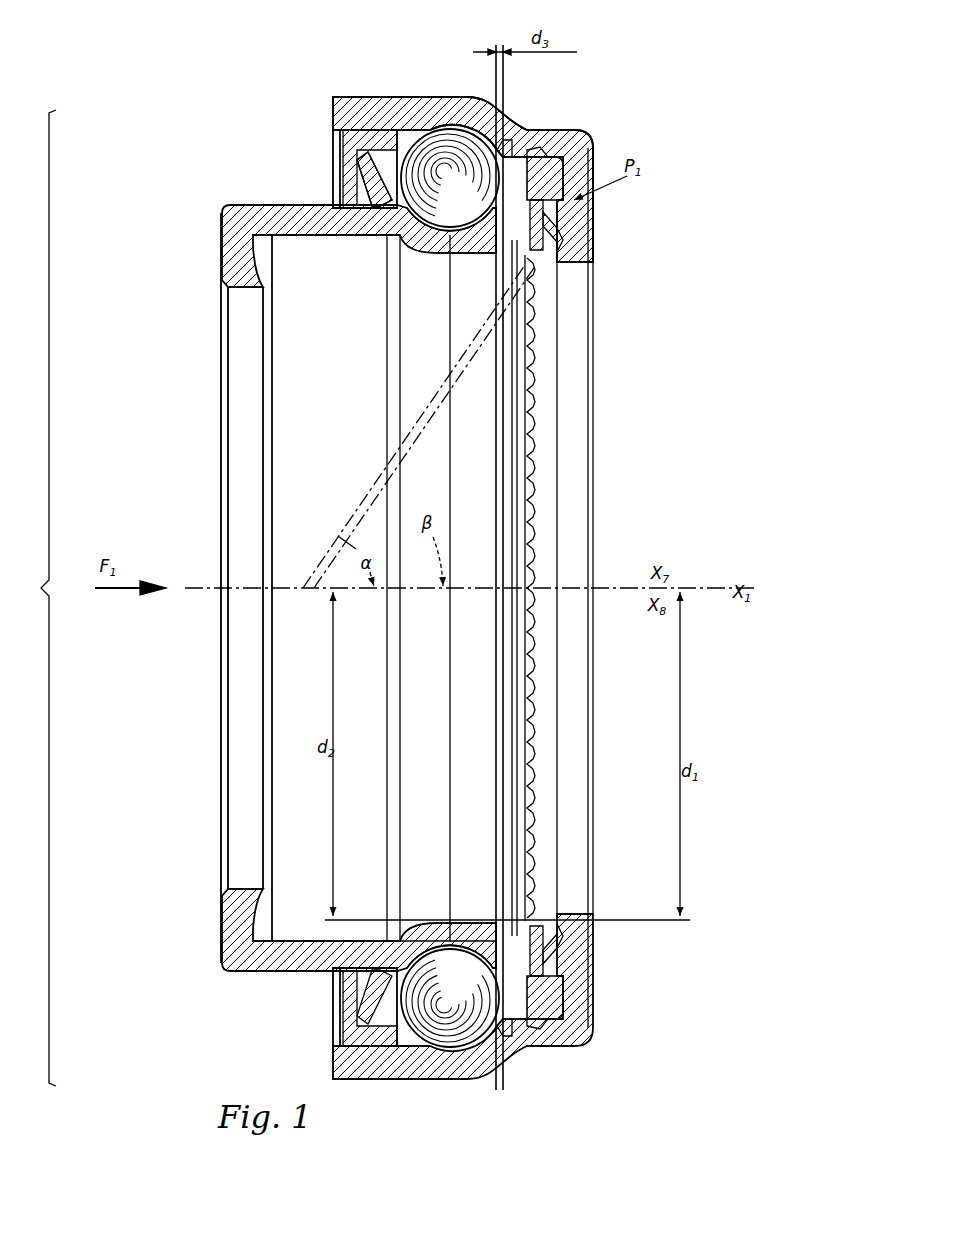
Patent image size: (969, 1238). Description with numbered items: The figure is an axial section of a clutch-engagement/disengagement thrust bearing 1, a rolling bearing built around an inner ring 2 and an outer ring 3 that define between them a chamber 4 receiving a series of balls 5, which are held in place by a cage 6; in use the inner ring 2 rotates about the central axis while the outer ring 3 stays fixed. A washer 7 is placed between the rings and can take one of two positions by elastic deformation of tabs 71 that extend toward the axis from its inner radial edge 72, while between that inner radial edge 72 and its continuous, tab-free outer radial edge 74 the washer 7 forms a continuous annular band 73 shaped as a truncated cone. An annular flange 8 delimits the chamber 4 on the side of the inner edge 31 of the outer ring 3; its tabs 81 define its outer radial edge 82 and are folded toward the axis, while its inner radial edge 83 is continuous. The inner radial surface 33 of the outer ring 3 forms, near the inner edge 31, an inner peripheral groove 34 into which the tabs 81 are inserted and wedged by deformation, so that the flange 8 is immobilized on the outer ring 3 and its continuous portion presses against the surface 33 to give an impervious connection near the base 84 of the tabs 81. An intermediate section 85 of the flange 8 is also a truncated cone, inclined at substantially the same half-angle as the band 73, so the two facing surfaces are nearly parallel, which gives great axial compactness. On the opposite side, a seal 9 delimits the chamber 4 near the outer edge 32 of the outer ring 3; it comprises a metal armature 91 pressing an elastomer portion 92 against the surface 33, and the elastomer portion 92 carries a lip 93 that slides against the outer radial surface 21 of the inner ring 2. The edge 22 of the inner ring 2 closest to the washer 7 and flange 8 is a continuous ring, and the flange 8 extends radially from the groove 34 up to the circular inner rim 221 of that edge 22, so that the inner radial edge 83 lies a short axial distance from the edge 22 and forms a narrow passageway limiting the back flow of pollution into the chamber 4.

The thrust bearing 1 is at (38, 598).
The inner ring 2 is at (220, 262).
The outer ring 3 is at (425, 103).
The chamber 4 is at (389, 101).
The balls 5 is at (447, 208).
The cage 6 is at (518, 1040).
The washer 7 is at (527, 567).
The annular flange 8 is at (578, 985).
The seal 9 is at (275, 165).
The outer radial surface 21 is at (386, 163).
The edge 22 is at (592, 950).
The inner edge 31 is at (572, 266).
The outer edge 32 is at (331, 107).
The inner radial surface 33 is at (407, 207).
The inner peripheral groove 34 is at (575, 162).
The tabs 71 is at (541, 408).
The inner radial edge 72 is at (536, 657).
The continuous annular band 73 is at (561, 216).
The outer radial edge 74 is at (562, 197).
The tabs 81 is at (560, 152).
The outer radial edge 82 is at (518, 1013).
The inner radial edge 83 is at (546, 896).
The base 84 is at (536, 148).
The intermediate section 85 is at (566, 236).
The metal armature 91 is at (340, 151).
The elastomer portion 92 is at (338, 193).
The lip 93 is at (343, 237).
The circular inner rim 221 is at (496, 898).